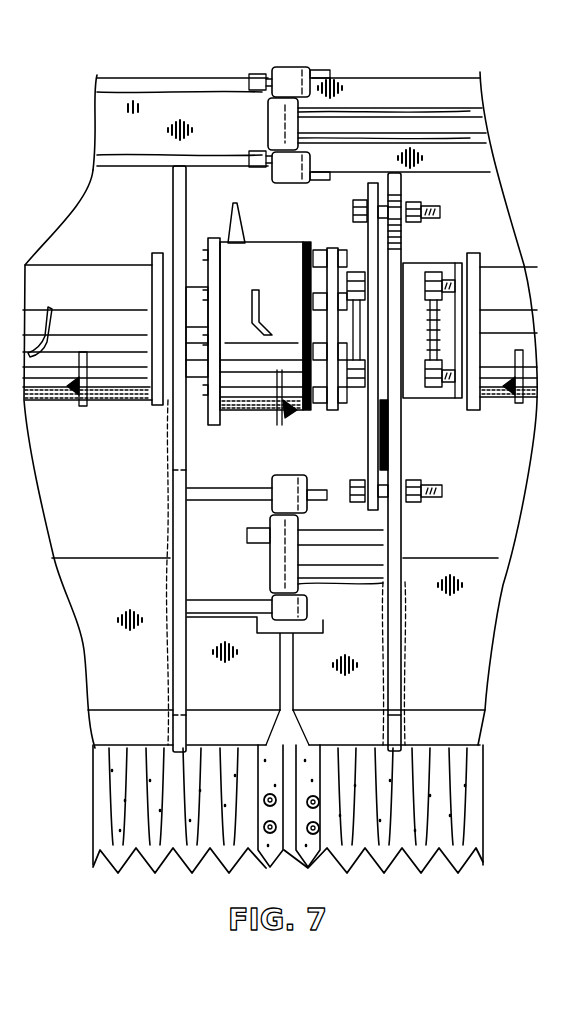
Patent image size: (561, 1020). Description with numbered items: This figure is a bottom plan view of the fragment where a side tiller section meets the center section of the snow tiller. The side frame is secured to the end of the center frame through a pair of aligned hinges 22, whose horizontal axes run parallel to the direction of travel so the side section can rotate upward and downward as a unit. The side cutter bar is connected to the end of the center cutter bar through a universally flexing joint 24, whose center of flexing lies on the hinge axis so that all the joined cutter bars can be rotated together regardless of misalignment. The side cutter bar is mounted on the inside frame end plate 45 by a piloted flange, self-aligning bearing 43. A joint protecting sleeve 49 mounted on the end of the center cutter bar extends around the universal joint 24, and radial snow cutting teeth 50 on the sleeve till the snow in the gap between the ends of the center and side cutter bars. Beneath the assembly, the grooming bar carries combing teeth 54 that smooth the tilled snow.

The hinge 22 is at (283, 68).
The universally flexing joint 24 is at (310, 285).
The piloted flange, self-aligning bearing 43 is at (422, 273).
The inside frame end plate 45 is at (398, 187).
The joint protecting sleeve 49 is at (296, 250).
The radial snow cutting teeth 50 is at (285, 417).
The combing teeth 54 is at (460, 807).